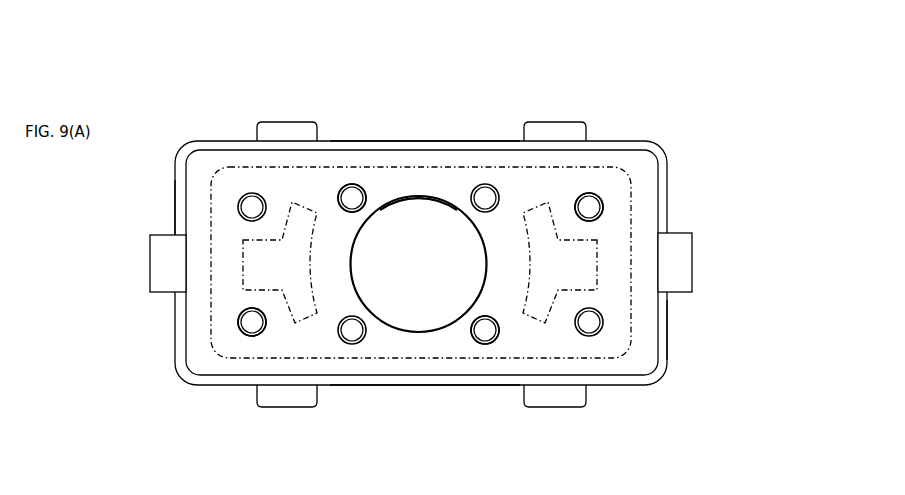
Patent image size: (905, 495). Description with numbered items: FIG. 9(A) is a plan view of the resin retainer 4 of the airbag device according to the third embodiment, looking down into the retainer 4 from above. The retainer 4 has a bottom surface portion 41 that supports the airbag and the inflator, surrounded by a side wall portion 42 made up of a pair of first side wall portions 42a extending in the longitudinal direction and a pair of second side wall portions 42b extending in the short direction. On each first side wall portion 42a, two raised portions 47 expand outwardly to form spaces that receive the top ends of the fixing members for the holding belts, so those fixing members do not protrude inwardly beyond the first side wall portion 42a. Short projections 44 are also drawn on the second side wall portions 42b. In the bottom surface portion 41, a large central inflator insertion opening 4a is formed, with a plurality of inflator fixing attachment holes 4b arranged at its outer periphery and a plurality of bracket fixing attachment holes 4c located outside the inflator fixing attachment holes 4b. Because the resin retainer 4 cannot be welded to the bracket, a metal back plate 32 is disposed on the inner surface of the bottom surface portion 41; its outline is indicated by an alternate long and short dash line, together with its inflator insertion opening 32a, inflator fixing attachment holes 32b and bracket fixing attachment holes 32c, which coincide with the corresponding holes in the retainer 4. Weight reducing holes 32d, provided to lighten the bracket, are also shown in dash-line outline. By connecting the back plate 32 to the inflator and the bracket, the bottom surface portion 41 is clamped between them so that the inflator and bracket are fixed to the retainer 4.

The retainer 4 is at (663, 125).
The inflator insertion opening 4a is at (418, 198).
The inflator fixing attachment holes 4b is at (345, 204).
The bracket fixing attachment holes 4c is at (245, 214).
The back plate 32 is at (349, 166).
The inflator insertion opening 32a is at (411, 197).
The inflator fixing attachment holes 32b is at (340, 191).
The bracket fixing attachment holes 32c is at (600, 220).
The weight reducing holes 32d is at (306, 267).
The bottom surface portion 41 is at (647, 366).
The side wall portion 42 is at (653, 389).
The first side wall portions 42a is at (421, 141).
The second side wall portions 42b is at (175, 199).
The side protrusions 44 is at (150, 265).
The raised portion 47 is at (288, 121).